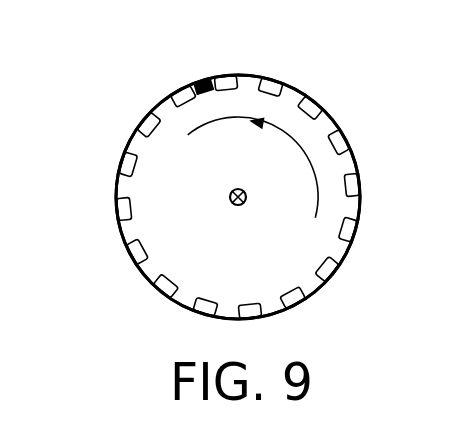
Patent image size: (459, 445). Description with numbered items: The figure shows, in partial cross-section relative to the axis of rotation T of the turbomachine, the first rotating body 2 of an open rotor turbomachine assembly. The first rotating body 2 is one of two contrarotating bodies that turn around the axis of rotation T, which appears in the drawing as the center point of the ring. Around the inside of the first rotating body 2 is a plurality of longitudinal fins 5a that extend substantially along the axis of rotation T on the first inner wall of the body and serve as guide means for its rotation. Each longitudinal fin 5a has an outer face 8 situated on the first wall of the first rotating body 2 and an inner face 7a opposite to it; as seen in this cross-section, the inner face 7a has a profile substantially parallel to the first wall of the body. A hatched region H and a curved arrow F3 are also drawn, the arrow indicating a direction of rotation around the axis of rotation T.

The first rotating body 2 is at (114, 109).
The longitudinal fin 5a is at (225, 77).
The inner face 7a is at (289, 293).
The outer face 8 is at (297, 303).
The hole H is at (203, 82).
The direction of rotation F3 is at (262, 124).
The axis of rotation T is at (230, 198).